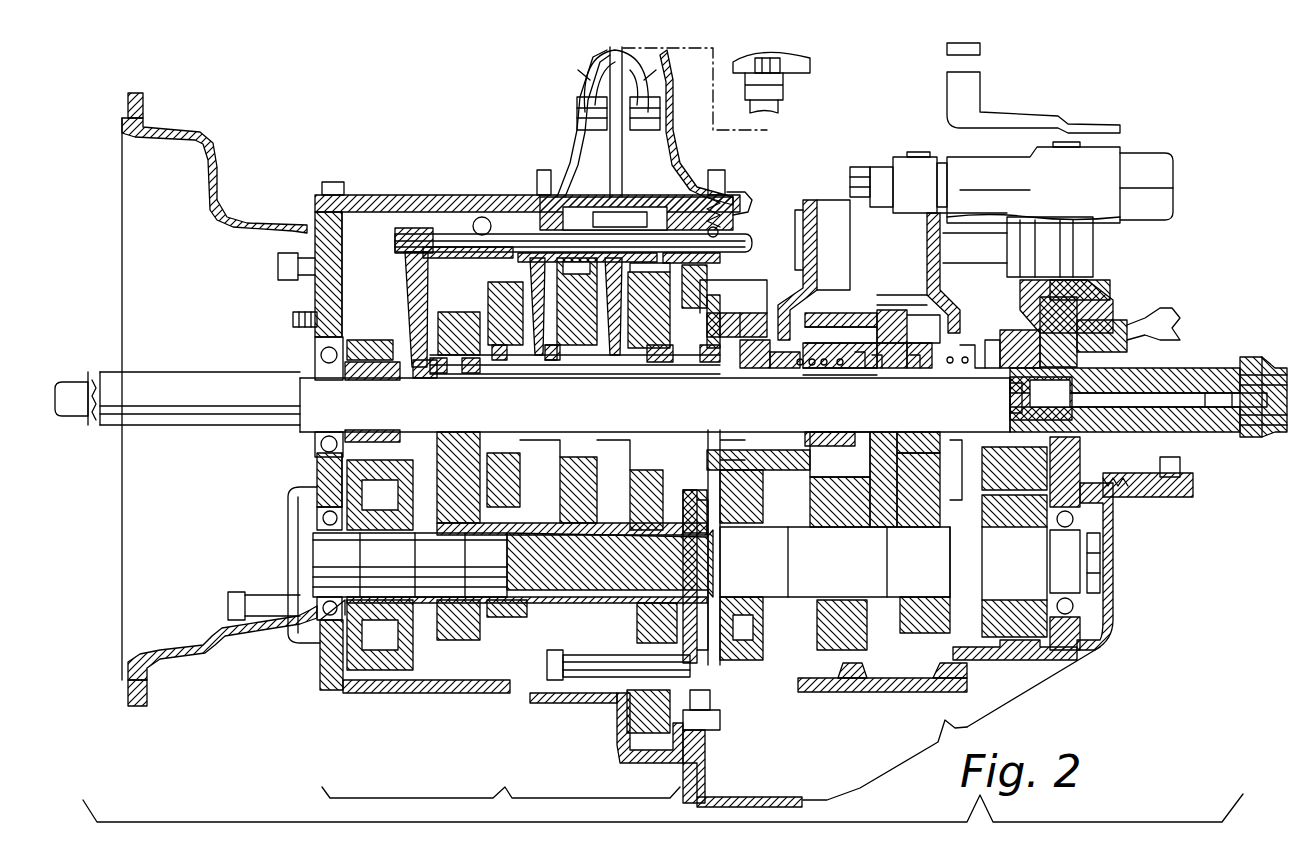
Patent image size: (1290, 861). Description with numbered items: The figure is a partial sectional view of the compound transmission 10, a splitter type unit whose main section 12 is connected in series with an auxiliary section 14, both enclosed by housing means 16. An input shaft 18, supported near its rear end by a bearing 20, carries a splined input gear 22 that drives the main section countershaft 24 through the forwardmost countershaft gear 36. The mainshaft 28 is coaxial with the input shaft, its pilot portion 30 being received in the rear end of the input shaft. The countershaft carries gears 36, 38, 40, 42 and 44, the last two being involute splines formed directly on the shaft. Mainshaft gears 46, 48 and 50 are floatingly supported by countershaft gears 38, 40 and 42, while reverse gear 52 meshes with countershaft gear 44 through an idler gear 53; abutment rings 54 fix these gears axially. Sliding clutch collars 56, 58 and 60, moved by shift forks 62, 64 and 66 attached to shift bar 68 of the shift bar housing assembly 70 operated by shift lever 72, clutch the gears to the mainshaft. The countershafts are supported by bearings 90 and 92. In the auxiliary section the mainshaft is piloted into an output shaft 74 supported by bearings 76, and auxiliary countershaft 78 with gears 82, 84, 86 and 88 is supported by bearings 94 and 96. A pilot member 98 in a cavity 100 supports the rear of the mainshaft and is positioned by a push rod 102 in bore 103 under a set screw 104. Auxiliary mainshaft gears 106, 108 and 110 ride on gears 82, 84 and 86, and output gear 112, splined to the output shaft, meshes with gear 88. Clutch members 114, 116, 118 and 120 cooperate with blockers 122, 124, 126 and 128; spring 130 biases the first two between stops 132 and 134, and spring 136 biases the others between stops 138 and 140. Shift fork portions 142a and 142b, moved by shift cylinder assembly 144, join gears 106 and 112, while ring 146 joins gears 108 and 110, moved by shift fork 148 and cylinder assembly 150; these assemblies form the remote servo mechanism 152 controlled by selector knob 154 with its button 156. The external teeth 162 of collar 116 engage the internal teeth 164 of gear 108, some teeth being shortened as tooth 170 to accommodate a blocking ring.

The compound transmission 10 is at (487, 110).
The main section 12 is at (663, 790).
The auxiliary section 14 is at (904, 615).
The housing means 16 is at (372, 196).
The input shaft 18 is at (168, 378).
The bearing 20 is at (338, 348).
The input gear 22 is at (375, 340).
The main section countershaft 24 is at (450, 566).
The mainshaft 28 is at (590, 428).
The pilot portion 30 is at (355, 412).
The countershaft gear 36 is at (403, 648).
The countershaft gear 38 is at (483, 642).
The countershaft gear 40 is at (505, 608).
The countershaft gear 42 is at (577, 592).
The countershaft gear 44 is at (615, 530).
The mainshaft drive gear 46 is at (450, 462).
The mainshaft drive gear 48 is at (497, 307).
The mainshaft drive gear 50 is at (588, 301).
The reverse gear 52 is at (657, 313).
The intermediate idler gear 53 is at (650, 735).
The abutment ring 54 is at (462, 380).
The sliding clutch collar 56 is at (622, 365).
The sliding clutch collar 58 is at (549, 365).
The sliding clutch collar 60 is at (423, 380).
The shift fork 62 is at (608, 360).
The shift fork 64 is at (535, 355).
The shift fork 66 is at (412, 290).
The shift bar 68 is at (748, 244).
The shift bar housing assembly 70 is at (738, 192).
The shift lever 72 is at (598, 82).
The output shaft 74 is at (1212, 370).
The bearings 76 is at (1140, 352).
The auxiliary section countershaft 78 is at (935, 566).
The auxiliary countershaft gear 82 is at (755, 630).
The auxiliary countershaft gear 84 is at (862, 622).
The auxiliary countershaft gear 86 is at (940, 608).
The auxiliary countershaft gear 88 is at (1000, 632).
The bearing 90 is at (330, 618).
The bearing 92 is at (720, 540).
The bearing 94 is at (710, 705).
The bearing 96 is at (1063, 620).
The pilot member 98 is at (1070, 365).
The cavity 100 is at (950, 372).
The push rod 102 is at (1232, 408).
The bore 103 is at (1208, 408).
The set screw 104 is at (1277, 405).
The auxiliary section mainshaft gear 106 is at (740, 323).
The auxiliary section mainshaft gear 108 is at (818, 305).
The auxiliary section mainshaft gear 110 is at (890, 298).
The output gear 112 is at (1095, 308).
The clutch member 114 is at (766, 380).
The clutch member 116 is at (860, 372).
The clutch member 118 is at (916, 372).
The clutch member 120 is at (1015, 390).
The blocker 122 is at (763, 478).
The blocker 124 is at (830, 480).
The blocker 126 is at (960, 480).
The blocker 128 is at (988, 530).
The spring 130 is at (787, 370).
The positive stop 132 is at (738, 375).
The positive stop 134 is at (838, 370).
The spring 136 is at (940, 360).
The stop 138 is at (905, 370).
The stop 140 is at (1030, 355).
The shift fork portion 142a is at (812, 250).
The shift fork portion 142b is at (812, 236).
The shift cylinder assembly 144 is at (862, 163).
The ring 146 is at (880, 372).
The shift fork 148 is at (880, 292).
The shift cylinder assembly 150 is at (1085, 248).
The remote servo mechanism 152 is at (1078, 108).
The selector knob 154 is at (818, 75).
The button 156 is at (790, 58).
The external teeth 162 is at (830, 440).
The internal teeth 164 is at (875, 480).
The partially removed tooth 170 is at (808, 370).